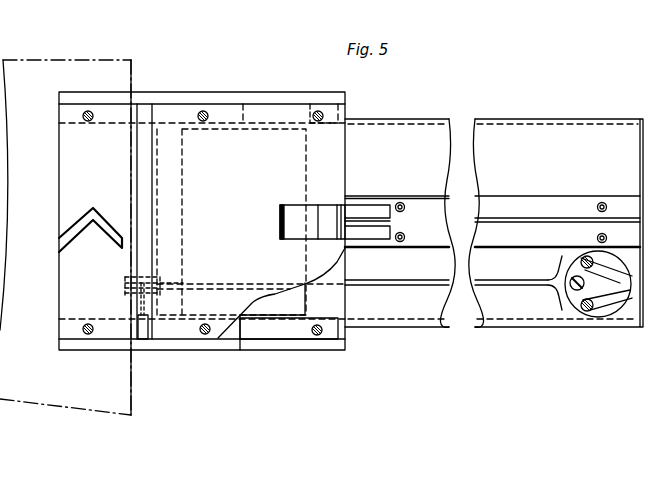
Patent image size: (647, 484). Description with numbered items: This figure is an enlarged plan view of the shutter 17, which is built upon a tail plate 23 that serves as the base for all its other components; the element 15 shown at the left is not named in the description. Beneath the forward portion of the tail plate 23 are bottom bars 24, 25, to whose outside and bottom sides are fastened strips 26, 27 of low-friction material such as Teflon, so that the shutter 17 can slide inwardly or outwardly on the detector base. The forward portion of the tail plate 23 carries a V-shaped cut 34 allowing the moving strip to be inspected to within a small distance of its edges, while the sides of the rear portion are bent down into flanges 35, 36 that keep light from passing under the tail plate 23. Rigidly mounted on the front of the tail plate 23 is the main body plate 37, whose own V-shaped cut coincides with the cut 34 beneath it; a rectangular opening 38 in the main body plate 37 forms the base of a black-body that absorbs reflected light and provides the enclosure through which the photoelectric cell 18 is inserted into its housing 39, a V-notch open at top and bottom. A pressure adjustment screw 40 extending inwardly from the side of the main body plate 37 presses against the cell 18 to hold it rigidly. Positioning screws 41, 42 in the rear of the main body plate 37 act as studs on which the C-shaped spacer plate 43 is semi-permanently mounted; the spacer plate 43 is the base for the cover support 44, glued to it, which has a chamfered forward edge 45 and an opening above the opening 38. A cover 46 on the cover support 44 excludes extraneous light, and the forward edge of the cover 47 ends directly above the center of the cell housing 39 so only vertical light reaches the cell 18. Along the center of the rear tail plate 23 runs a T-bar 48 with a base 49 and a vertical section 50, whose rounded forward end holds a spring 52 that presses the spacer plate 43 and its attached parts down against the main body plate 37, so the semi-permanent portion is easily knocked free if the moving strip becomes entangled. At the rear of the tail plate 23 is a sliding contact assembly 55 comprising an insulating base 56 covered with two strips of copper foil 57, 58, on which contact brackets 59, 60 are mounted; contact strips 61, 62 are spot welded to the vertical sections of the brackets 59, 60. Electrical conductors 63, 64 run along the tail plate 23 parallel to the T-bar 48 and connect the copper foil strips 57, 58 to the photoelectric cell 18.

The door 15 is at (65, 237).
The shutter 17 is at (300, 356).
The photoelectric cell 18 is at (153, 281).
The tail plate 23 is at (494, 223).
The bottom bar 24 is at (220, 357).
The bottom bar 25 is at (222, 98).
The strip 26 is at (268, 352).
The strip 27 is at (285, 100).
The V-shaped cut 34 is at (85, 220).
The flange 35 is at (473, 323).
The flange 36 is at (452, 121).
The main body plate 37 is at (75, 268).
The rectangular opening 38 is at (298, 296).
The cell housing 39 is at (127, 297).
The pressure adjustment screw 40 is at (146, 341).
The positioning screw 41 is at (310, 330).
The positioning screw 42 is at (314, 124).
The C-shaped spacer plate 43 is at (337, 270).
The cover support 44 is at (253, 302).
The chamfered forward edge 45 is at (146, 181).
The cover 46 is at (231, 222).
The forward edge of the cover 47 is at (137, 160).
The T-bar 48 is at (437, 194).
The base 49 is at (492, 241).
The vertical section 50 is at (557, 219).
The spring 52 is at (280, 212).
The sliding contact assembly 55 is at (603, 322).
The base of insulating material 56 is at (589, 285).
The strip of copper foil 57 is at (606, 302).
The strip of copper foil 58 is at (606, 269).
The contact bracket 59 is at (588, 309).
The contact bracket 60 is at (592, 252).
The contact strip 61 is at (627, 297).
The contact strip 62 is at (623, 257).
The electrical conductor 63 is at (517, 287).
The electrical conductor 64 is at (506, 279).